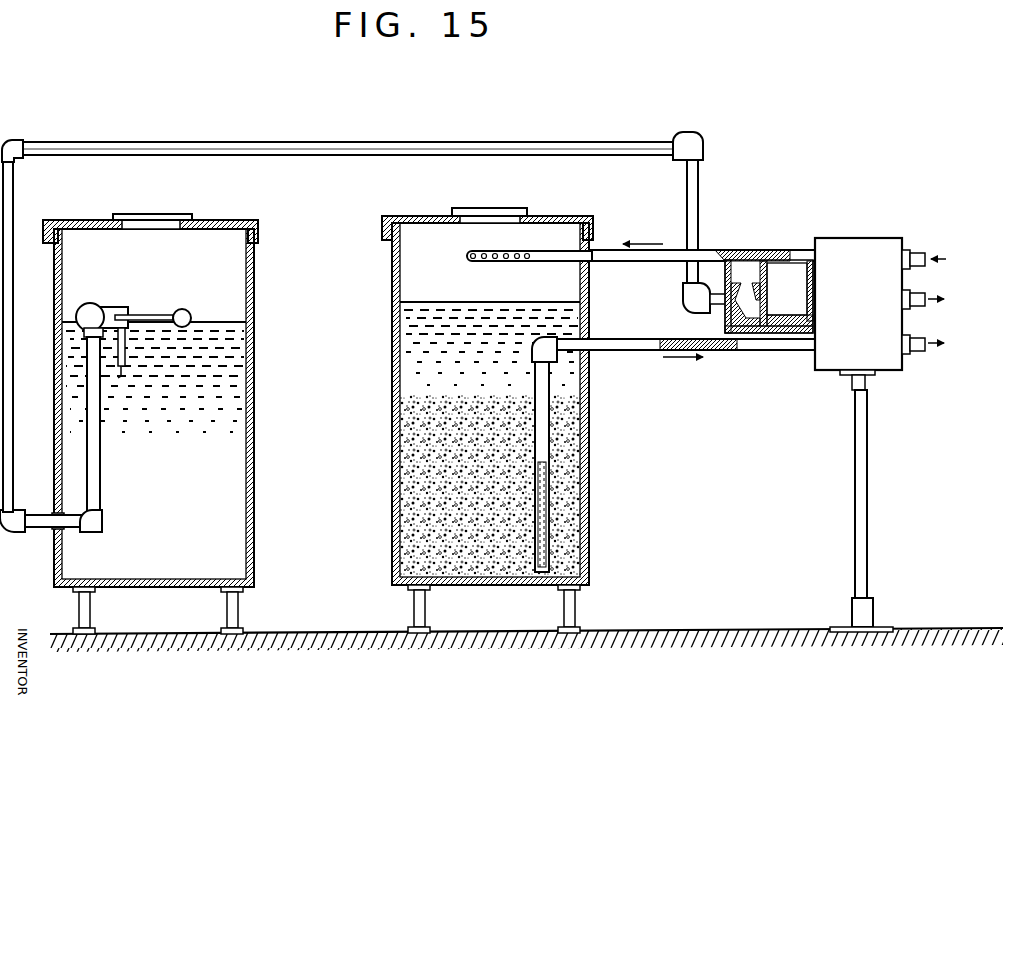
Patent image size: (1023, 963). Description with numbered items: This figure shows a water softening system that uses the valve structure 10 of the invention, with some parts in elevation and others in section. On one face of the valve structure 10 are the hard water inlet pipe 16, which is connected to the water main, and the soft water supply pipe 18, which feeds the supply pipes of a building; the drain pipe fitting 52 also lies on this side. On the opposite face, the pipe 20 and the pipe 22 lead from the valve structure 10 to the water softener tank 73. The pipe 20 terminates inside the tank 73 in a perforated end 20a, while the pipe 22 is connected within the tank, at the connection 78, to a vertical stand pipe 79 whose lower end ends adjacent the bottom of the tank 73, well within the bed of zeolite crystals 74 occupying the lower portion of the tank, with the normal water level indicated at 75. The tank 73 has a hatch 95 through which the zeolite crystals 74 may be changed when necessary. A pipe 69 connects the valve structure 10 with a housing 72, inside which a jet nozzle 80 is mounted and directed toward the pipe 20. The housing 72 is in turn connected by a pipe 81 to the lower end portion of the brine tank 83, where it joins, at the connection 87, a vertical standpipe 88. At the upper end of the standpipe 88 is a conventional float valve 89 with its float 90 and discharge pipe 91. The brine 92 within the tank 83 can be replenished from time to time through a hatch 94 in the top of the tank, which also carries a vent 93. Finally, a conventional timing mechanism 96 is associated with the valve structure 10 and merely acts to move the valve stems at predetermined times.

The valve structure 10 is at (867, 230).
The hard water inlet pipe 16 is at (917, 248).
The soft water supply pipe 18 is at (918, 356).
The pipe 20 is at (793, 255).
The perforated end 20a is at (493, 250).
The pipe 22 is at (785, 351).
The drain pipe fitting 52 is at (896, 303).
The pipe 69 is at (803, 309).
The housing 72 is at (770, 278).
The water softener tank 73 is at (590, 425).
The bed of zeolite crystals 74 is at (430, 463).
The normal water level 75 is at (503, 302).
The connection 78 is at (533, 354).
The vertical stand pipe 79 is at (540, 406).
The jet nozzle 80 is at (761, 264).
The pipe 81 is at (528, 145).
The tank 83 is at (258, 290).
The connection 87 is at (100, 521).
The vertical standpipe 88 is at (93, 465).
The float valve 89 is at (102, 300).
The float 90 is at (153, 316).
The discharge pipe 91 is at (122, 380).
The brine 92 is at (227, 322).
The vent 93 is at (78, 221).
The hatch 94 is at (162, 217).
The hatch 95 is at (480, 213).
The timing mechanism 96 is at (841, 386).